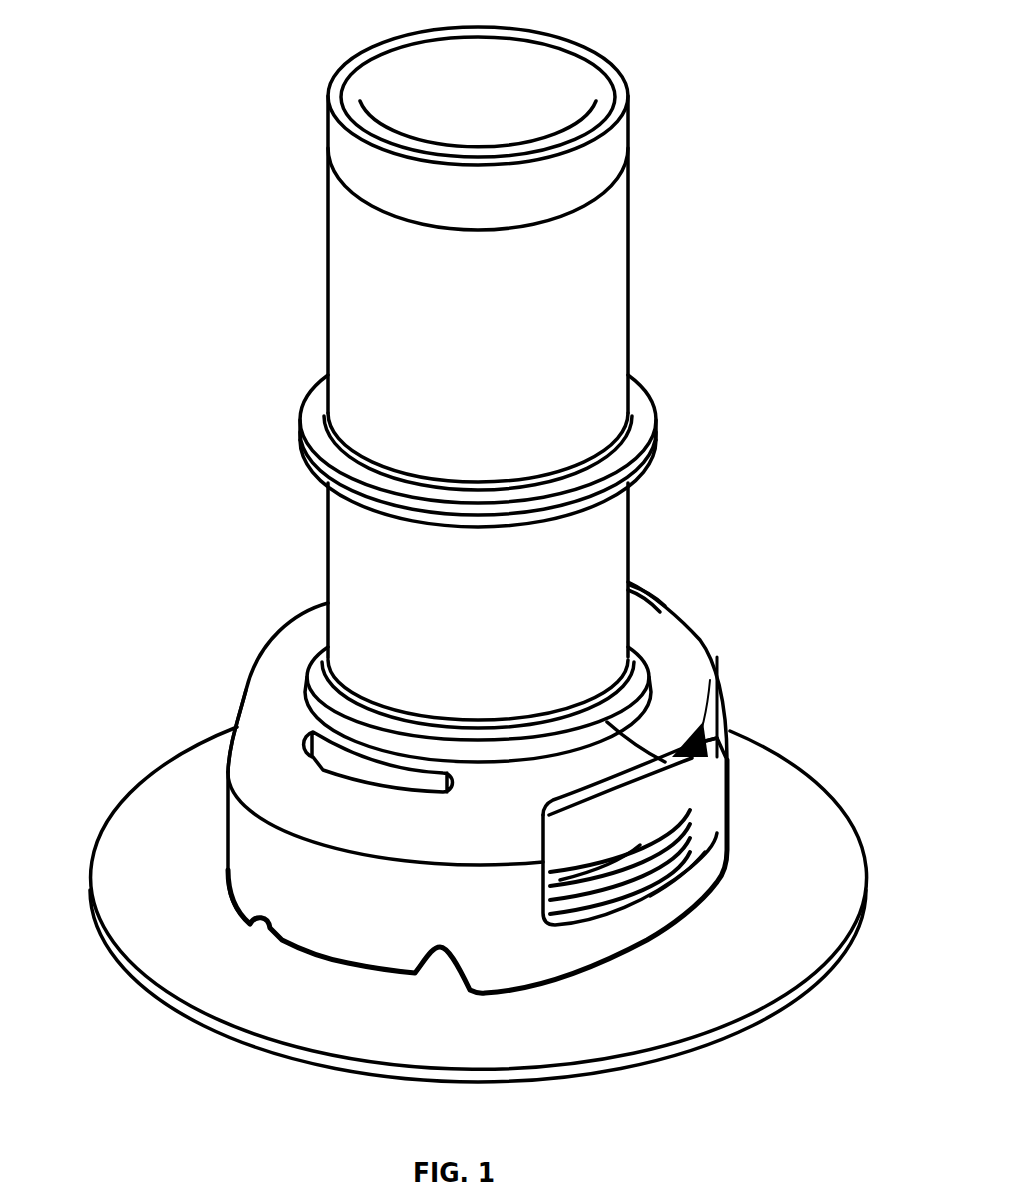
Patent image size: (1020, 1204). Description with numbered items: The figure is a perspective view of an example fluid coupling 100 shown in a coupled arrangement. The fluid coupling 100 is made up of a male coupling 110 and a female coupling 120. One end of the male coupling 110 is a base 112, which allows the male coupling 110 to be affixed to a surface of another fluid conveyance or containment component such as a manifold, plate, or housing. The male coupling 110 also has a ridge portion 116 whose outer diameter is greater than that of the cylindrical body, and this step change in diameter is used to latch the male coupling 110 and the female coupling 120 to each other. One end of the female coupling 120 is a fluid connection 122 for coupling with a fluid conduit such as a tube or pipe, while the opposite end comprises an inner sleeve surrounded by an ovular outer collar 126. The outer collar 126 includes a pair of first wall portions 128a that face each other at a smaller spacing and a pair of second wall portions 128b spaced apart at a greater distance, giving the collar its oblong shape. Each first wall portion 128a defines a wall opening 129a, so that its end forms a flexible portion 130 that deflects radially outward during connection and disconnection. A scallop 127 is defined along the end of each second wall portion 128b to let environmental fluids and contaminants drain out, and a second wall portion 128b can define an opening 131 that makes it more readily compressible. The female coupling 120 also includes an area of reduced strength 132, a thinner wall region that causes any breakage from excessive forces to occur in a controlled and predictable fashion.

The fluid coupling 100 is at (742, 72).
The male coupling portion 110 is at (717, 810).
The base 112 is at (197, 744).
The ridge portion 116 is at (647, 800).
The female coupling portion 120 is at (495, 342).
The fluid connection 122 is at (325, 222).
The ovular outer collar 126 is at (233, 908).
The scallop 127 is at (453, 950).
The first wall portions 128a is at (717, 888).
The second wall portions 128b is at (358, 907).
The wall opening 129a is at (611, 849).
The flexible portion 130 is at (678, 898).
The opening 131 is at (655, 606).
The area of reduced strength 132 is at (361, 686).